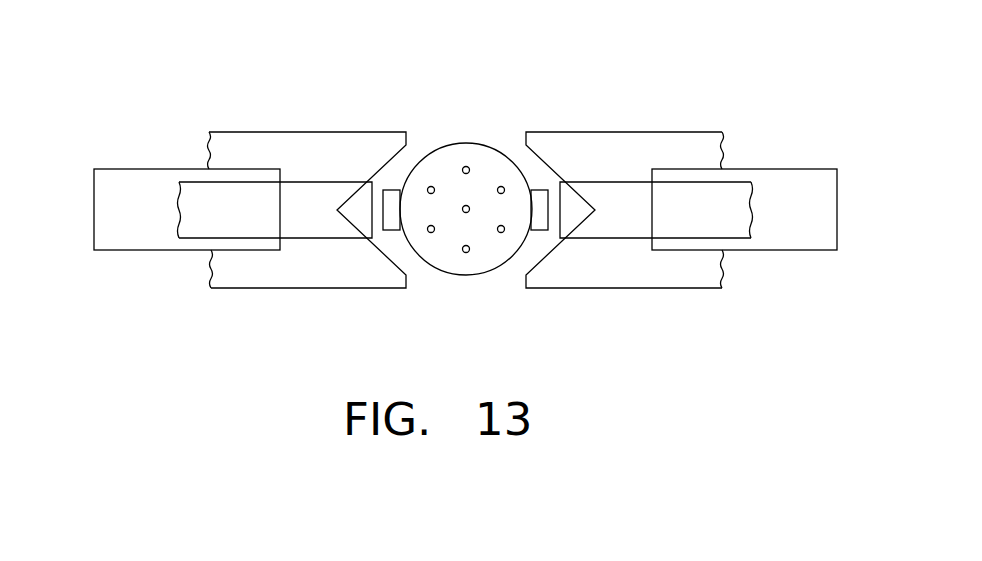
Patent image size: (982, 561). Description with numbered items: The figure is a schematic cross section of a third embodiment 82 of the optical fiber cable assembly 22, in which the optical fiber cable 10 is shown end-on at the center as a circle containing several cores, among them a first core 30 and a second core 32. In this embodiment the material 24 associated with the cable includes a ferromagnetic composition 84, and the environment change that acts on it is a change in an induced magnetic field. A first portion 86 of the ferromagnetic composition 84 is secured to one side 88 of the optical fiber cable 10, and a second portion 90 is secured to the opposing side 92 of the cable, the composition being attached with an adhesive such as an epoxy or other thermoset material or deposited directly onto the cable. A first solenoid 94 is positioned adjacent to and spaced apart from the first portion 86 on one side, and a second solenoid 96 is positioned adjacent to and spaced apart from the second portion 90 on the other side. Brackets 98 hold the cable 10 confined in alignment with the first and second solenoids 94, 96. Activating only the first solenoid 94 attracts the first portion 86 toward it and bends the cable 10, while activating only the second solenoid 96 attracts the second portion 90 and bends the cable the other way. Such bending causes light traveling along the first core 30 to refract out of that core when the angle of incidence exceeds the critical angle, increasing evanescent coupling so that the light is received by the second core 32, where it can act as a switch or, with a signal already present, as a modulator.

The optical fiber cable 10 is at (449, 142).
The optical fiber cable assembly 22 is at (476, 179).
The material 24 is at (542, 188).
The first core 30 is at (467, 213).
The second core 32 is at (501, 187).
The third embodiment 82 is at (518, 128).
The ferromagnetic composition 84 is at (385, 198).
The first portion 86 is at (393, 185).
The one side 88 is at (393, 215).
The second portion 90 is at (537, 193).
The opposing side 92 is at (533, 233).
The first solenoid 94 is at (257, 202).
The second solenoid 96 is at (725, 207).
The brackets 98 is at (355, 272).